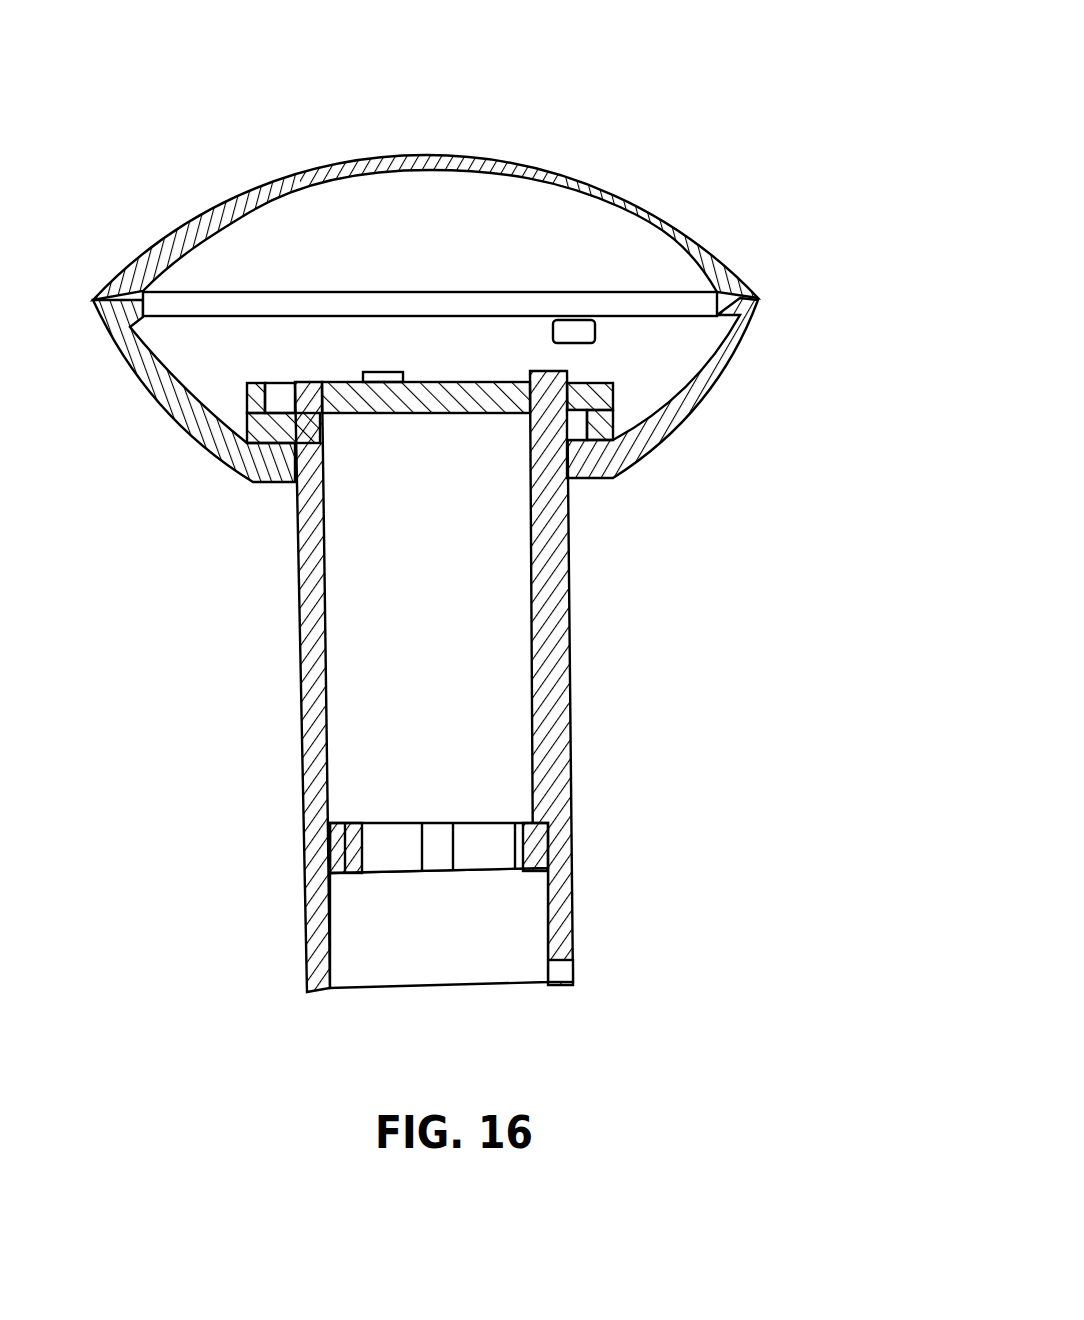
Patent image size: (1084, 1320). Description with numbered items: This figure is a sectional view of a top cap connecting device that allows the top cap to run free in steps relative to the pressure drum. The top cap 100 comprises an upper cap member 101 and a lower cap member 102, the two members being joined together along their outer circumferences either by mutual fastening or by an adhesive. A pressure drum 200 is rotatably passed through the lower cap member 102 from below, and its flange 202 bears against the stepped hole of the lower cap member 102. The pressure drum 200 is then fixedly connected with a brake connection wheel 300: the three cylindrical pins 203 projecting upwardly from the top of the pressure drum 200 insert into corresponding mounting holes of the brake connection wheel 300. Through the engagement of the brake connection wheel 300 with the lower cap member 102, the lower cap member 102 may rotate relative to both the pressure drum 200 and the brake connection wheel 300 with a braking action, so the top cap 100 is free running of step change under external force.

The top cap 100 is at (462, 268).
The upper cap member 101 is at (636, 214).
The lower cap member 102 is at (712, 383).
The pressure drum 200 is at (548, 764).
The flange 202 is at (284, 473).
The cylindrical pins 203 is at (557, 375).
The brake connection wheel 300 is at (455, 395).